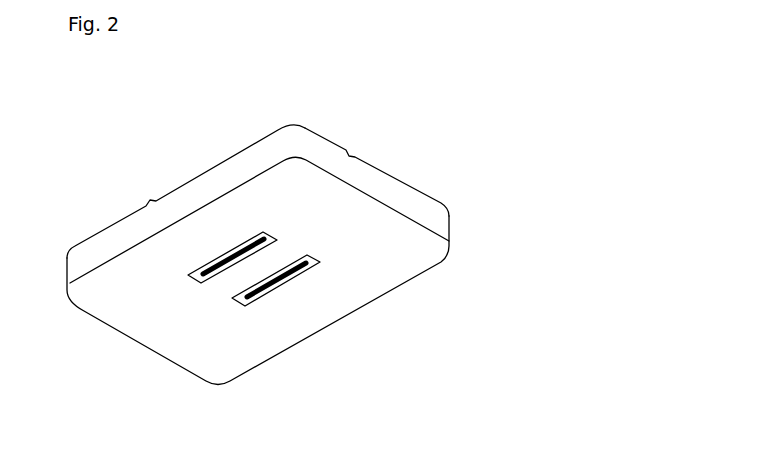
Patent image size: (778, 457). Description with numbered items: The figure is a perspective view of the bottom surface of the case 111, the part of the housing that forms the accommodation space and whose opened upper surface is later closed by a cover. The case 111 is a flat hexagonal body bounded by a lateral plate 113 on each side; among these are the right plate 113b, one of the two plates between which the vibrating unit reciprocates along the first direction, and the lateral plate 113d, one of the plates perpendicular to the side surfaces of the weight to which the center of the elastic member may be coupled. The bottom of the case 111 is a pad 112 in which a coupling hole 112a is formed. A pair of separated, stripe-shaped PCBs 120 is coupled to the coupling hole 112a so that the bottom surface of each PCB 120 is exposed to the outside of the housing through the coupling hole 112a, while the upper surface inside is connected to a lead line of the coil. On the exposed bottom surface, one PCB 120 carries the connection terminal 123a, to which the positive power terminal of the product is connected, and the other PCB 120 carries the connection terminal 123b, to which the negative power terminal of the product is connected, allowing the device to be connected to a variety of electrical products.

The case 111 is at (599, 296).
The pad 112 is at (408, 272).
The coupling hole 112a is at (264, 234).
The lateral plate 113 is at (450, 227).
The right plate 113b is at (404, 193).
The lateral plate 113d is at (110, 239).
The PCB 120 is at (240, 300).
The connection terminal 123a is at (287, 290).
The connection terminal 123b is at (235, 252).